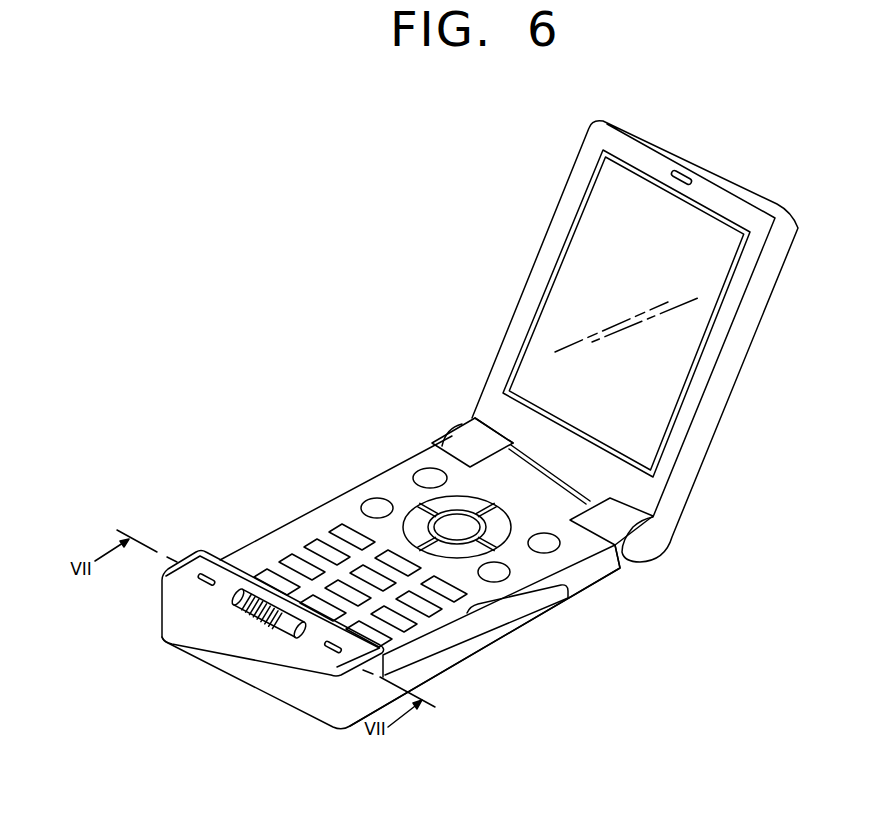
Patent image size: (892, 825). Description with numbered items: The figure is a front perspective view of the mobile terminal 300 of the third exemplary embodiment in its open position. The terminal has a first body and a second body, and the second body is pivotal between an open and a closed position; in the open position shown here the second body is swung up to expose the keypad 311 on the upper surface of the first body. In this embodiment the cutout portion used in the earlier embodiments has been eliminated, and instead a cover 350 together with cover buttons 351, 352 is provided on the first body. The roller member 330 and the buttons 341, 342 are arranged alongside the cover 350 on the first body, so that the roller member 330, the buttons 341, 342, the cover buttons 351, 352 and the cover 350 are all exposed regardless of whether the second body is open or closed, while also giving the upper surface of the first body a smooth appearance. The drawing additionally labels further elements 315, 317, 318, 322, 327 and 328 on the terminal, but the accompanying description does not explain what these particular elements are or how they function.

The mobile terminal 300 is at (369, 257).
The keypad 311 is at (500, 616).
The cover portion of first body 315 is at (458, 652).
The hinge portion 317 is at (467, 426).
The hinge part 318 is at (542, 483).
The display 322 is at (565, 303).
The hinge part 327 is at (527, 385).
The hinge part 328 is at (467, 433).
The roller member 330 is at (222, 668).
The button 341 is at (233, 597).
The button 342 is at (292, 630).
The cover 350 is at (203, 565).
The cover button 351 is at (200, 578).
The cover button 352 is at (327, 655).